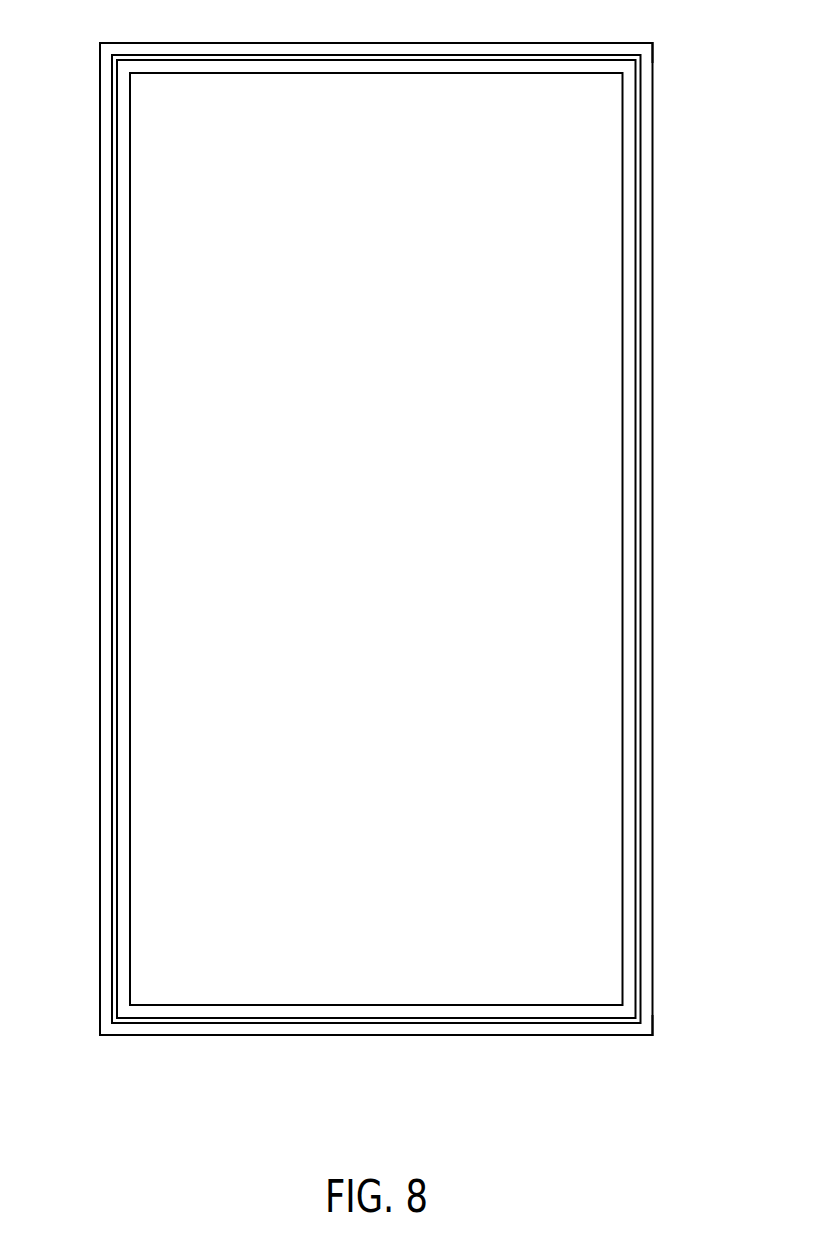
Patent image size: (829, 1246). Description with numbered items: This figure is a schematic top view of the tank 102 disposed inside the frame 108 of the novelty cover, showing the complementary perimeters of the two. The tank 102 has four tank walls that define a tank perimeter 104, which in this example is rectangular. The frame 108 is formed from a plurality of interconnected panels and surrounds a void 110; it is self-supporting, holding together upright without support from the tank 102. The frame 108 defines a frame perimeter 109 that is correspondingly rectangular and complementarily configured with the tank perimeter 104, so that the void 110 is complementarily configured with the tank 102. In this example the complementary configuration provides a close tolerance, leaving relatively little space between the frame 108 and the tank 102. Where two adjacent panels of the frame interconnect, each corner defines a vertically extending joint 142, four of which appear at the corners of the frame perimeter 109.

The tank 102 is at (630, 540).
The tank perimeter 104 is at (457, 73).
The frame 108 is at (652, 425).
The frame perimeter 109 is at (375, 43).
The void 110 is at (372, 522).
The vertically extending joint 142 is at (100, 43).